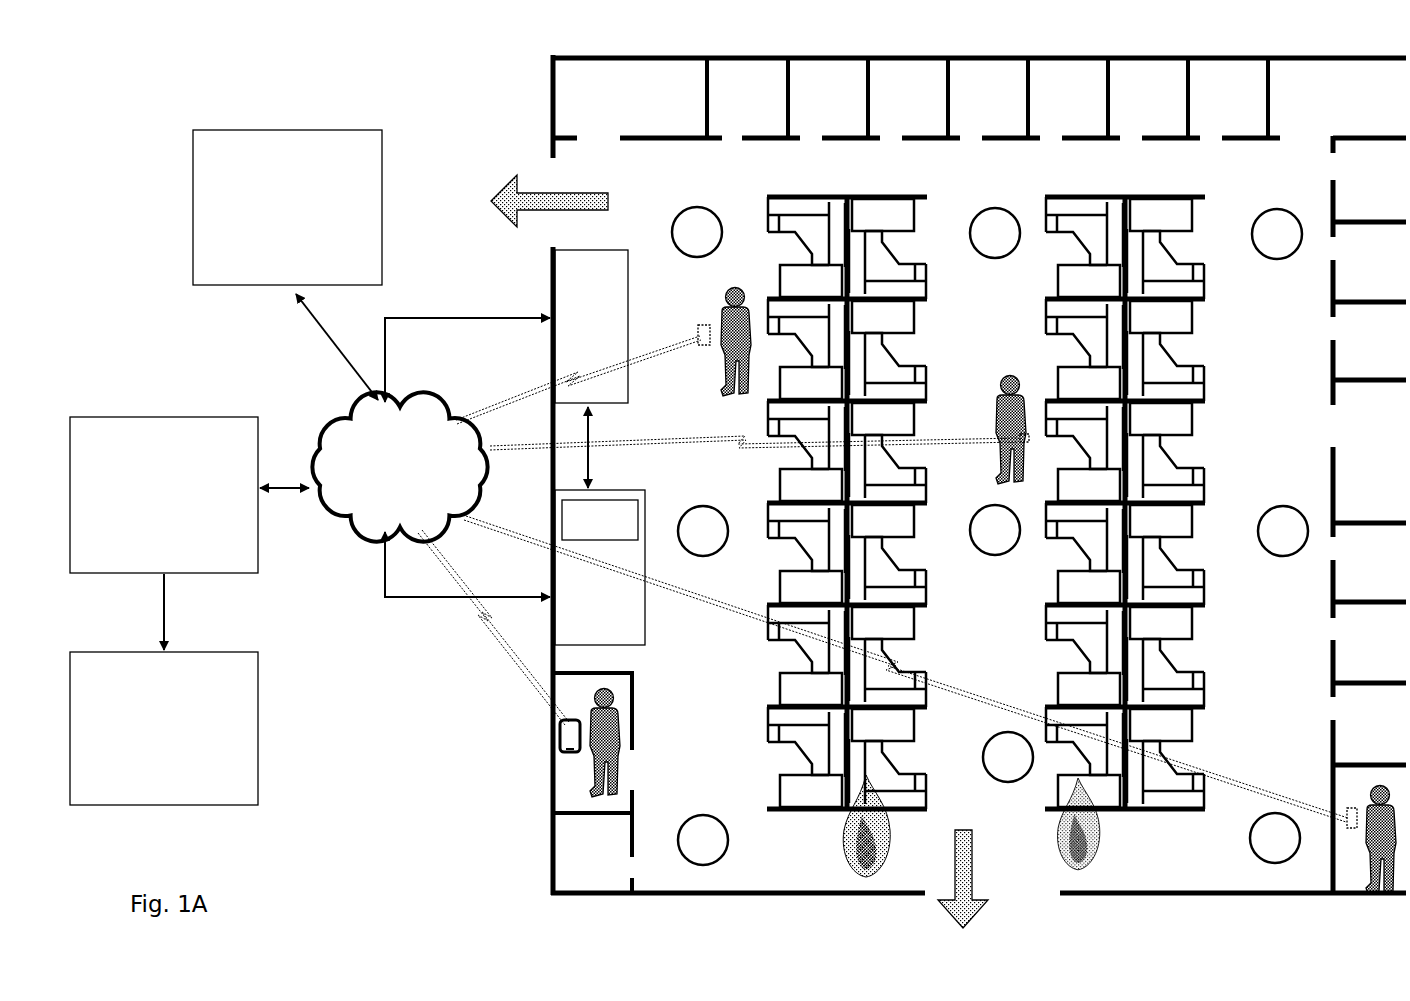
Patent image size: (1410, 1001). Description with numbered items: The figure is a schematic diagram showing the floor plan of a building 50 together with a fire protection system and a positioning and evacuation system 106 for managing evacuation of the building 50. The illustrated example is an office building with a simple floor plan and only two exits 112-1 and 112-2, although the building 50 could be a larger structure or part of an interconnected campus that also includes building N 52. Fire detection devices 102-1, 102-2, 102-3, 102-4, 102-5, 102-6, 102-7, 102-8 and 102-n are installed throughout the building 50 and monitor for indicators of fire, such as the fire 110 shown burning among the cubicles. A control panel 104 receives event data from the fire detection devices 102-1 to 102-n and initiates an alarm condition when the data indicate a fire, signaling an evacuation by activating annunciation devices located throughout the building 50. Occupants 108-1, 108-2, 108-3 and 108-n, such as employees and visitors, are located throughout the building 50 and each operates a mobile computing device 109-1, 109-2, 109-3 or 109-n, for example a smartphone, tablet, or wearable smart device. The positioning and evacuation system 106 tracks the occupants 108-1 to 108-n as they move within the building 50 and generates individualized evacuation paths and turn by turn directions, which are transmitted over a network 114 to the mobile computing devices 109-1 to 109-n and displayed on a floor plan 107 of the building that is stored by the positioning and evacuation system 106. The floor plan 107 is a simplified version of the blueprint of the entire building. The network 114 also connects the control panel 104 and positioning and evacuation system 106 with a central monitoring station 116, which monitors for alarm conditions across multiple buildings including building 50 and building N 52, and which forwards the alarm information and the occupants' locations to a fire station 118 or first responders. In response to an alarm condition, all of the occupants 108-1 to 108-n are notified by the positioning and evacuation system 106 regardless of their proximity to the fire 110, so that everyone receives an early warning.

The building 50 is at (590, 56).
The building N 52 is at (287, 207).
The fire detection device 102-1 is at (690, 207).
The fire detection device 102-2 is at (990, 208).
The fire detection device 102-3 is at (1274, 209).
The fire detection device 102-4 is at (690, 506).
The fire detection device 102-5 is at (990, 505).
The fire detection device 102-6 is at (1280, 506).
The fire detection device 102-7 is at (702, 815).
The fire detection device 102-8 is at (1010, 732).
The fire detection device 102-n is at (1270, 813).
The control panel 104 is at (591, 326).
The positioning and evacuation system 106 is at (600, 567).
The floor plan 107 is at (600, 520).
The occupant 108-1 is at (730, 288).
The occupant 108-2 is at (1008, 375).
The occupant 108-3 is at (612, 690).
The occupant 108-n is at (1372, 786).
The mobile computing device 109-1 is at (700, 323).
The mobile computing device 109-2 is at (1020, 434).
The mobile computing device 109-3 is at (560, 720).
The mobile computing device 109-n is at (1348, 808).
The fire 110 is at (842, 841).
The exit 112-1 is at (546, 195).
The exit 112-2 is at (965, 830).
The network 114 is at (399, 466).
The central monitoring station 116 is at (164, 495).
The fire station 118 is at (164, 728).